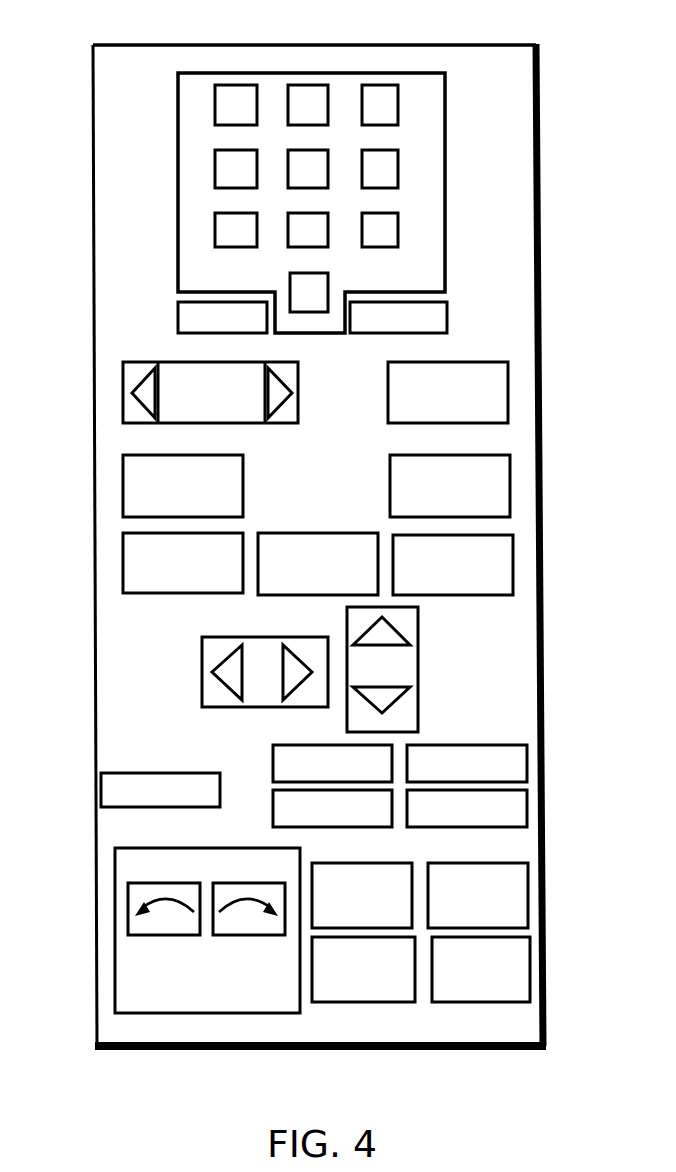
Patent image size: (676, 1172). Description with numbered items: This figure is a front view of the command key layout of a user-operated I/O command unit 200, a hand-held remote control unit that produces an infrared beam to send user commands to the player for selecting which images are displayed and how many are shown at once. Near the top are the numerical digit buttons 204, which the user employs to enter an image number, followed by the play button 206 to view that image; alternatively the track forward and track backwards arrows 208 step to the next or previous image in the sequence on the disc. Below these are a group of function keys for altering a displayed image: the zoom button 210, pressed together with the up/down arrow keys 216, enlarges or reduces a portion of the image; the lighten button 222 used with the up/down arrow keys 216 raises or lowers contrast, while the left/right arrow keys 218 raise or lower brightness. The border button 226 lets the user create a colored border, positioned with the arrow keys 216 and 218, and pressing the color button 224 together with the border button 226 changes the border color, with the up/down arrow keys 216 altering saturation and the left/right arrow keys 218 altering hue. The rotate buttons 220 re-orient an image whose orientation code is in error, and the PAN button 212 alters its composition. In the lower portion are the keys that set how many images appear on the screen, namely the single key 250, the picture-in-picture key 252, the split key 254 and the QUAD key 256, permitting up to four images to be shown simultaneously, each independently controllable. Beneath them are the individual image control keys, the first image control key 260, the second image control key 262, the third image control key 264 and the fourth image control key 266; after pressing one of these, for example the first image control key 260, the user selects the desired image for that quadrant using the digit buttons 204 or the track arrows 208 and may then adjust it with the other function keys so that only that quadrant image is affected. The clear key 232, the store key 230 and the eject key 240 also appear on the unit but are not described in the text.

The remote control unit 200 is at (89, 148).
The numerical digit buttons 204 is at (264, 73).
The play button 206 is at (508, 400).
The track forward and track backwards arrows 208 is at (123, 400).
The zoom button 210 is at (510, 483).
The PAN button 212 is at (123, 483).
The up/down arrow keys 216 is at (420, 693).
The left/right arrow keys 218 is at (202, 680).
The rotate buttons 220 is at (115, 960).
The lighten button 222 is at (123, 560).
The color button 224 is at (513, 565).
The border button 226 is at (284, 595).
The STORE button 230 is at (447, 320).
The CLEAR button 232 is at (178, 322).
The EJECT button 240 is at (118, 807).
The single key 250 is at (273, 760).
The picture in picture key 252 is at (527, 762).
The split key 254 is at (290, 827).
The QUAD key 256 is at (505, 830).
The IMAGE 1 control key 260 is at (412, 915).
The IMAGE 2 control key 262 is at (528, 905).
The IMAGE 3 control key 264 is at (348, 1002).
The IMAGE 4 control key 266 is at (528, 983).